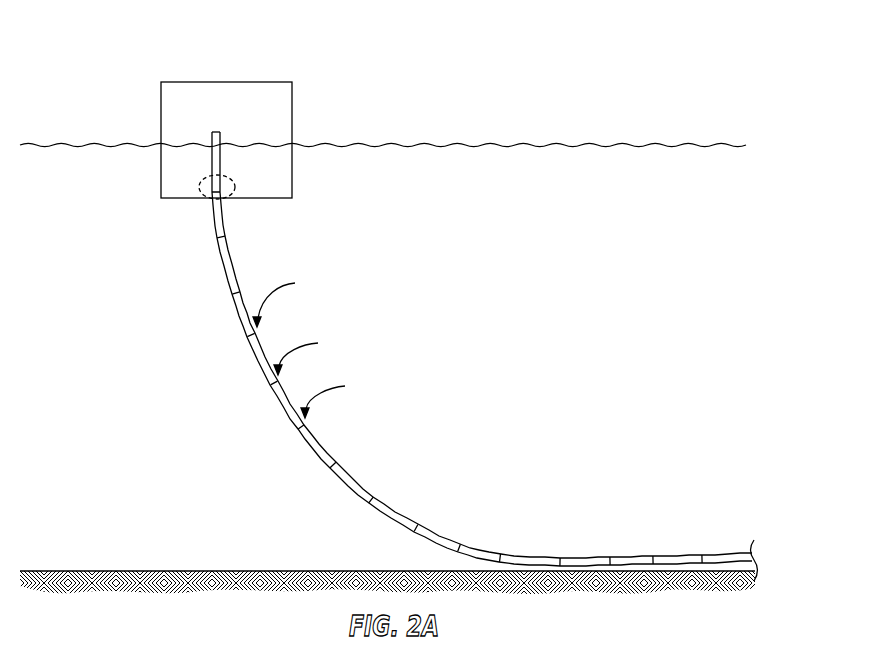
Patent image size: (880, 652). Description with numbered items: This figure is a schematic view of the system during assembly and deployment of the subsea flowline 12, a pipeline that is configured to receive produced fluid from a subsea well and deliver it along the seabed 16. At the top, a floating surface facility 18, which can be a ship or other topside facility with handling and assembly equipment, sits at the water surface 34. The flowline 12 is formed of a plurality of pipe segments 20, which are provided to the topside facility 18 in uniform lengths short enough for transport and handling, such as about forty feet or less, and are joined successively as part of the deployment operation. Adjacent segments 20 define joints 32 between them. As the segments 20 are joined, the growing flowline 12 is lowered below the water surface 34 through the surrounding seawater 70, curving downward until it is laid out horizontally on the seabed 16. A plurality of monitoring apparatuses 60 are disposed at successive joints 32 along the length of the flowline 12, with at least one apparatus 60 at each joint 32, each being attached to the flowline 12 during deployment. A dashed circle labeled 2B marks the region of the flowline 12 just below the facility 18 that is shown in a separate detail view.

The subsea flowline 12 is at (467, 345).
The seabed 16 is at (120, 571).
The floating surface facility 18 is at (195, 82).
The pipe segment 20 is at (220, 137).
The detail view circle 2B is at (198, 188).
The joint 32 is at (256, 335).
The water surface 34 is at (482, 145).
The monitoring apparatus 60 is at (311, 344).
The seawater 70 is at (610, 333).